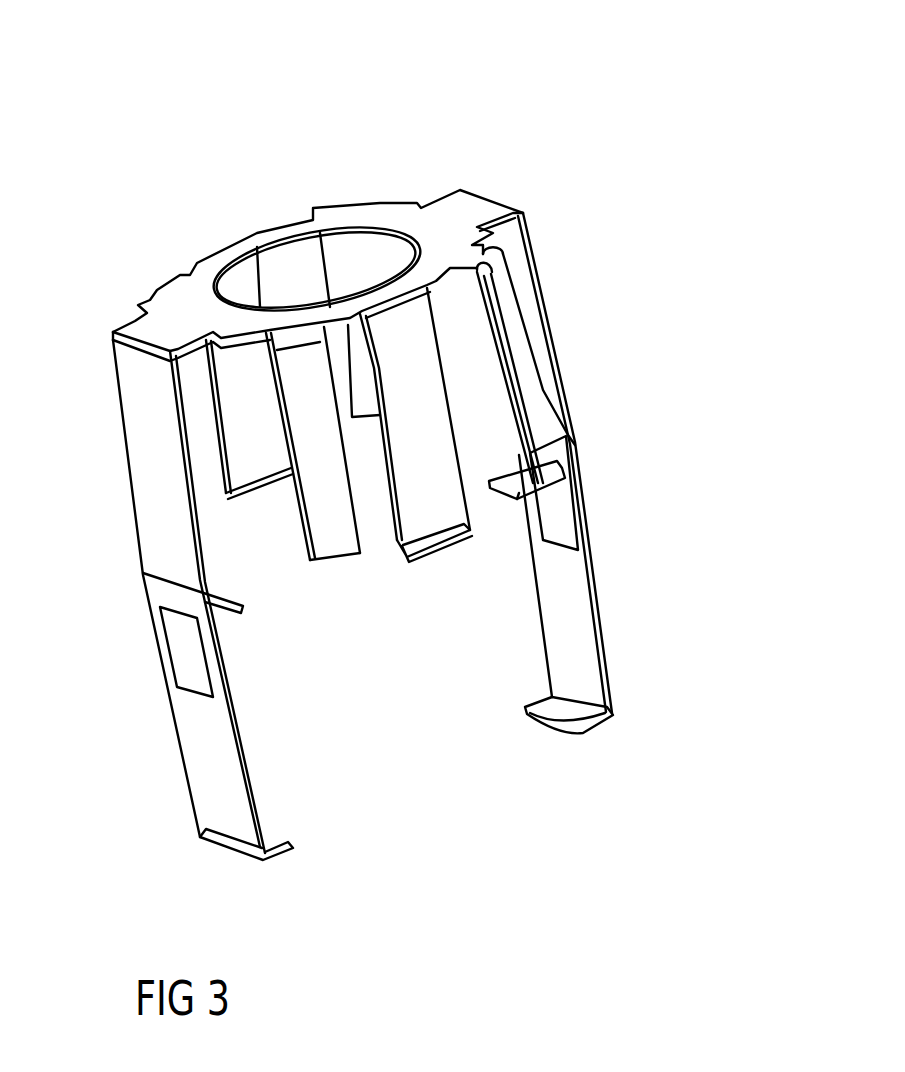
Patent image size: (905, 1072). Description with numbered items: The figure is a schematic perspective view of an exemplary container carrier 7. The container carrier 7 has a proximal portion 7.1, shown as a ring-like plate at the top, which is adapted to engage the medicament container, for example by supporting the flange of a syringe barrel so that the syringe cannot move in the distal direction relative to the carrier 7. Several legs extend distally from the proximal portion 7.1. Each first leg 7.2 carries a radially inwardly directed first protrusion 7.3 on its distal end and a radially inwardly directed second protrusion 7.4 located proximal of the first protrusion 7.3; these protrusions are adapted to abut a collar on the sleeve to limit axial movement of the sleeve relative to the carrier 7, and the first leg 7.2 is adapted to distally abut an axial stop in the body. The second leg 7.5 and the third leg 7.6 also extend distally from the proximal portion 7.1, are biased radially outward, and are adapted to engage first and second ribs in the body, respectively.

The container carrier 7 is at (459, 168).
The proximal portion 7.1 is at (190, 292).
The first leg 7.2 is at (212, 766).
The first protrusion 7.3 is at (605, 722).
The second protrusion 7.4 is at (523, 488).
The second leg 7.5 is at (358, 262).
The third leg 7.6 is at (233, 436).